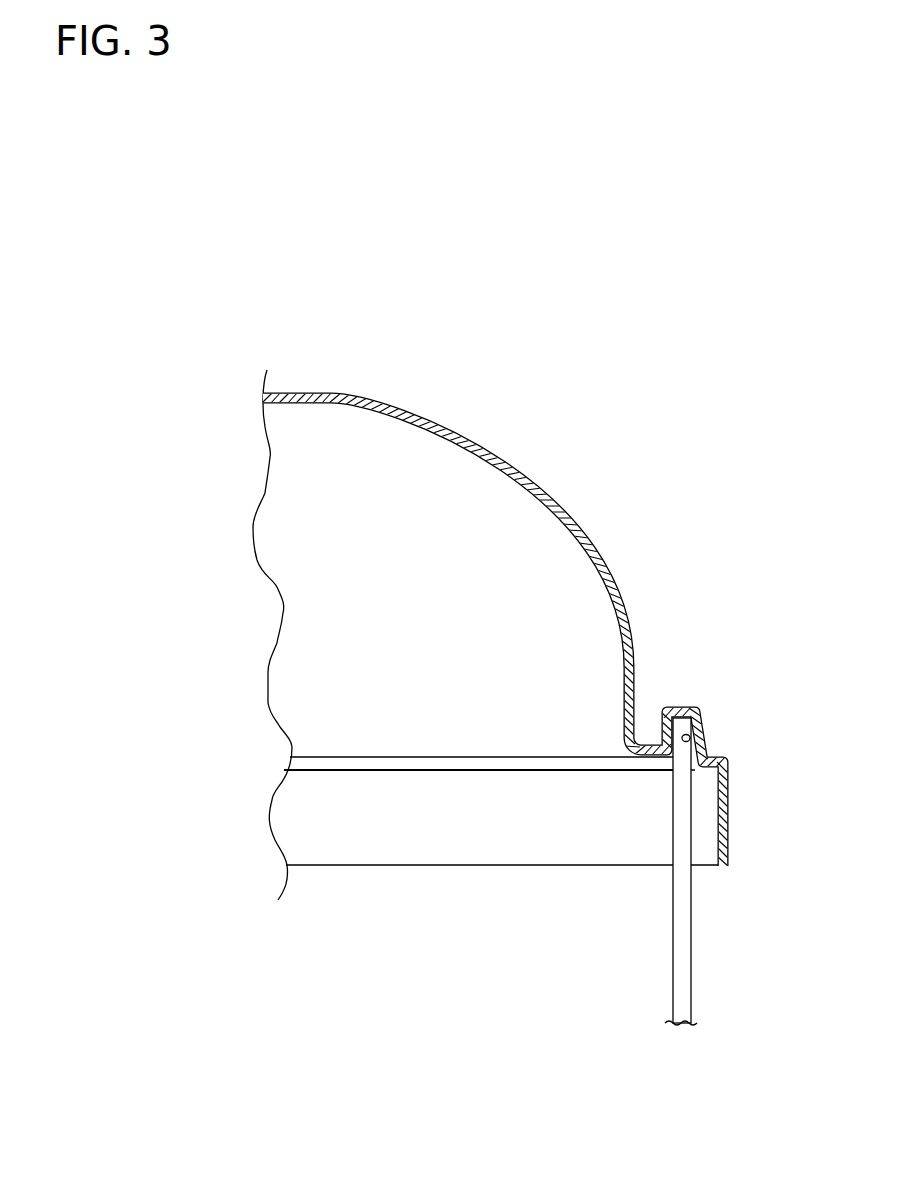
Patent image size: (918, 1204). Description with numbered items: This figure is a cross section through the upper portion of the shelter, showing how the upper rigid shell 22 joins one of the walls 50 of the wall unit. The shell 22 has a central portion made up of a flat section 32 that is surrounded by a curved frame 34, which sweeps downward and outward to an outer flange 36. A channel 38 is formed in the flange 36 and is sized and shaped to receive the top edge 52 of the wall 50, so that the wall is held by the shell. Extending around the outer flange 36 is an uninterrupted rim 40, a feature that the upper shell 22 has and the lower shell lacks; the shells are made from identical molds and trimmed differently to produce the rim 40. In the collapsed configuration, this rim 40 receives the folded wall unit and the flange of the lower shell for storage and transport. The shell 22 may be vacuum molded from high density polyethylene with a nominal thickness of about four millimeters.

The upper rigid shell 22 is at (534, 603).
The flat section 32 is at (315, 393).
The curved frame 34 is at (597, 553).
The outer flange 36 is at (652, 757).
The channel 38 is at (690, 737).
The rim 40 is at (728, 818).
The wall 50 is at (692, 940).
The top edge 52 is at (678, 707).